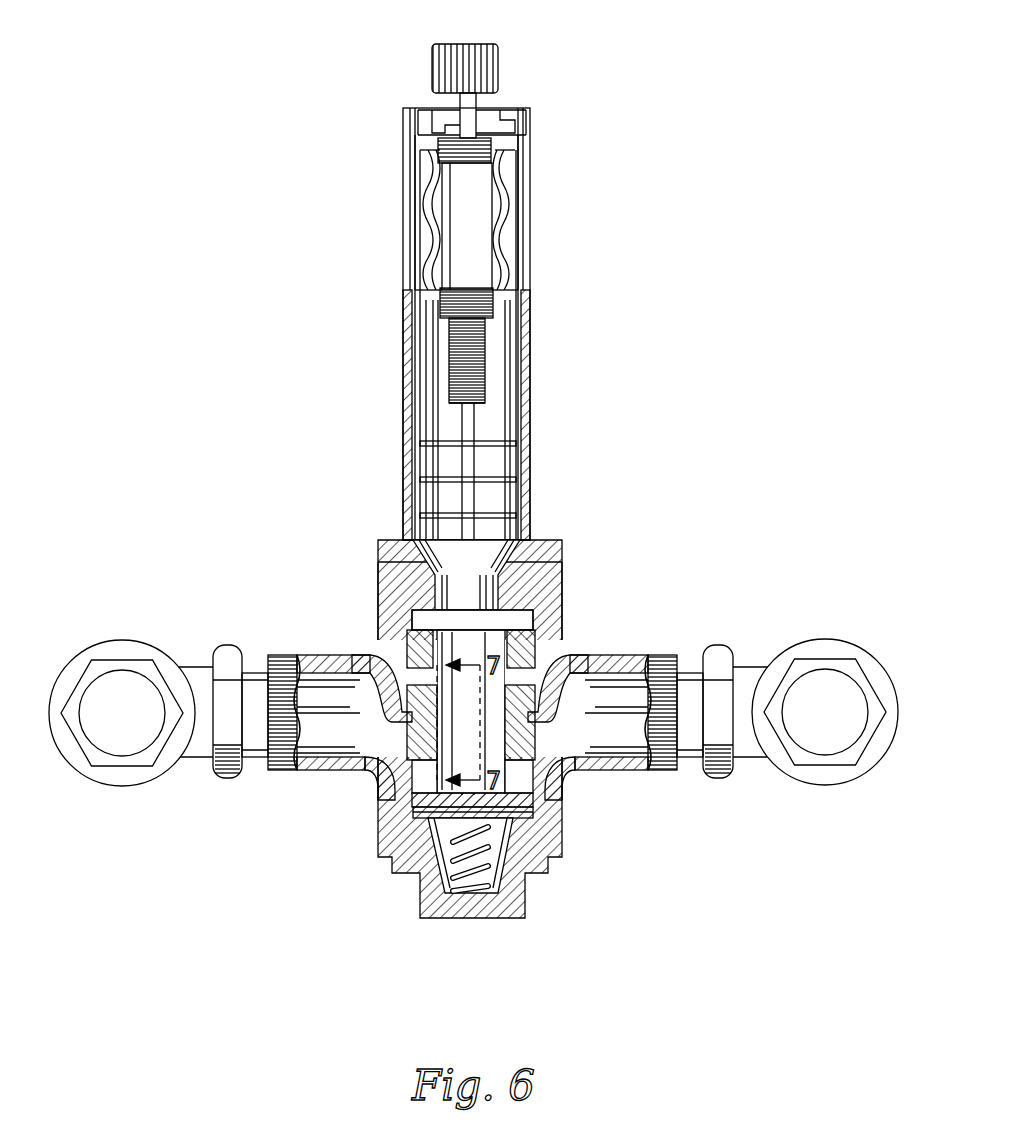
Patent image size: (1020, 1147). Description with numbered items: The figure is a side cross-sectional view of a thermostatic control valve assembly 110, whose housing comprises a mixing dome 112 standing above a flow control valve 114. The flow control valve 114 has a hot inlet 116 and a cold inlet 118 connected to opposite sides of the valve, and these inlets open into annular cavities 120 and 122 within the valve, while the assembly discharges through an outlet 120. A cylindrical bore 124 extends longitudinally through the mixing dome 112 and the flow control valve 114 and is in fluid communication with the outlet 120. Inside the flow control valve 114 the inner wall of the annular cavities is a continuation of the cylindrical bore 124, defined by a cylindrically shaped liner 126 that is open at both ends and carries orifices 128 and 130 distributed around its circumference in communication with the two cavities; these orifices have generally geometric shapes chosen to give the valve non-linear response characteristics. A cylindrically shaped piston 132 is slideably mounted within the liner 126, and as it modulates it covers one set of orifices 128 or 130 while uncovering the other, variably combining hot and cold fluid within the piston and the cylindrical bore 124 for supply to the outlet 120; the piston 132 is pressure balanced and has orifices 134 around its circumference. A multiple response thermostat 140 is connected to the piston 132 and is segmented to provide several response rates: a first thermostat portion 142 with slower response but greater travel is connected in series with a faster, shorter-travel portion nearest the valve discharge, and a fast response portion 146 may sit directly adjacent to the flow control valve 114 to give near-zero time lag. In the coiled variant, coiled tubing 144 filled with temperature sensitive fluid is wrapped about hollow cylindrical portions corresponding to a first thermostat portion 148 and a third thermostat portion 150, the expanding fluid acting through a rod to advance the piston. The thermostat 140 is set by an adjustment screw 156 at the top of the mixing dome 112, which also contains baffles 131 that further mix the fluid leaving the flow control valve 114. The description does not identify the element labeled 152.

The thermostatic control valve assembly 110 is at (232, 568).
The mixing dome 112 is at (555, 213).
The flow control valve 114 is at (583, 567).
The hot inlet 116 is at (128, 750).
The cold inlet 118 is at (832, 750).
The outlet 120 is at (512, 203).
The annular cavity 122 is at (384, 652).
The cylindrical bore 124 is at (523, 360).
The liner 126 is at (536, 615).
The orifices 128 is at (407, 648).
The orifices 130 is at (502, 538).
The baffles 131 is at (505, 443).
The piston 132 is at (414, 800).
The orifices 134 is at (512, 822).
The multiple response thermostat 140 is at (424, 302).
The first thermostat portion 142 is at (460, 458).
The coiled tubing 144 is at (446, 230).
The fast response portion 146 is at (452, 355).
The first thermostat portion 148 is at (491, 156).
The third thermostat portion 150 is at (422, 137).
The screw end 152 is at (488, 407).
The adjustment screw 156 is at (498, 70).